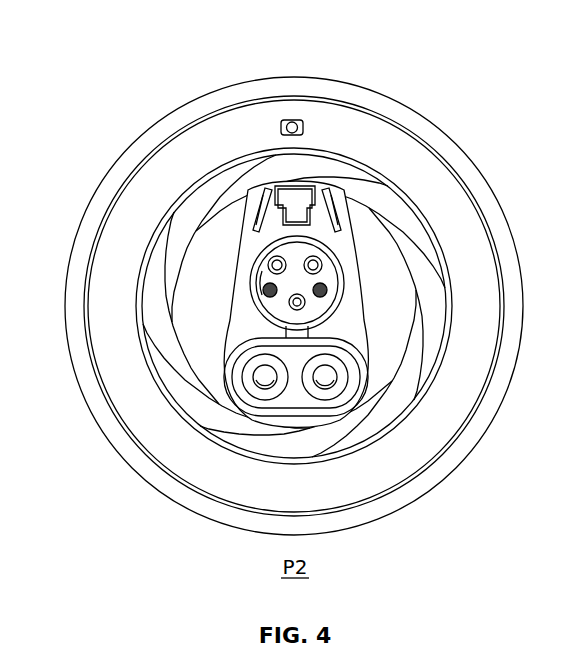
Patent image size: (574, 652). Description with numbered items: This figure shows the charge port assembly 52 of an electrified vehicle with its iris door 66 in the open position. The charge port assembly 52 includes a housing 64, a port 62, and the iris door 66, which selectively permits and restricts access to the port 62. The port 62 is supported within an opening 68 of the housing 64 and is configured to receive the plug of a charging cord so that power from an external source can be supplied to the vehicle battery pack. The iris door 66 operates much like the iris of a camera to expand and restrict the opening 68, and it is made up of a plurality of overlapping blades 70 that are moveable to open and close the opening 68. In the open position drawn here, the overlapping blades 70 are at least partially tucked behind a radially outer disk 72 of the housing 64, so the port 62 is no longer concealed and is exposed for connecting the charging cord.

The charge port assembly 52 is at (285, 280).
The port 62 is at (338, 342).
The housing 64 is at (502, 196).
The iris door 66 is at (313, 168).
The opening 68 is at (227, 285).
The overlapping blades 70 is at (226, 190).
The radially outer disk 72 is at (367, 130).